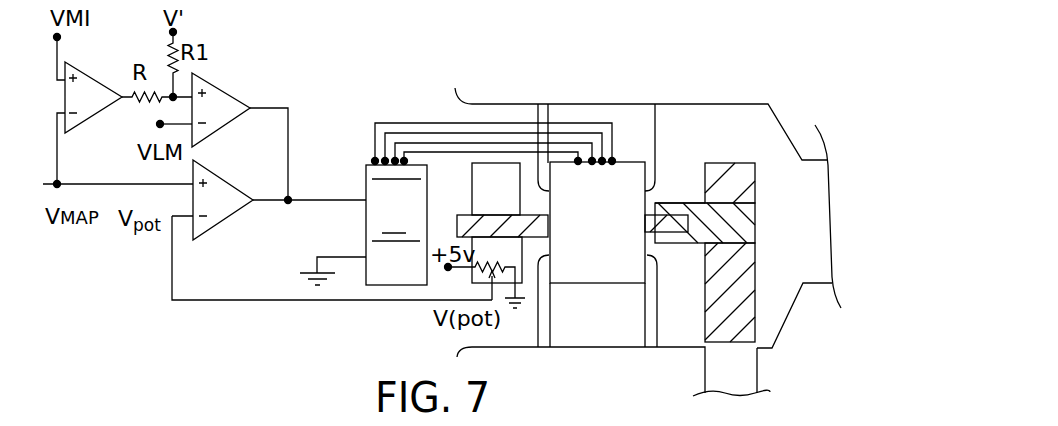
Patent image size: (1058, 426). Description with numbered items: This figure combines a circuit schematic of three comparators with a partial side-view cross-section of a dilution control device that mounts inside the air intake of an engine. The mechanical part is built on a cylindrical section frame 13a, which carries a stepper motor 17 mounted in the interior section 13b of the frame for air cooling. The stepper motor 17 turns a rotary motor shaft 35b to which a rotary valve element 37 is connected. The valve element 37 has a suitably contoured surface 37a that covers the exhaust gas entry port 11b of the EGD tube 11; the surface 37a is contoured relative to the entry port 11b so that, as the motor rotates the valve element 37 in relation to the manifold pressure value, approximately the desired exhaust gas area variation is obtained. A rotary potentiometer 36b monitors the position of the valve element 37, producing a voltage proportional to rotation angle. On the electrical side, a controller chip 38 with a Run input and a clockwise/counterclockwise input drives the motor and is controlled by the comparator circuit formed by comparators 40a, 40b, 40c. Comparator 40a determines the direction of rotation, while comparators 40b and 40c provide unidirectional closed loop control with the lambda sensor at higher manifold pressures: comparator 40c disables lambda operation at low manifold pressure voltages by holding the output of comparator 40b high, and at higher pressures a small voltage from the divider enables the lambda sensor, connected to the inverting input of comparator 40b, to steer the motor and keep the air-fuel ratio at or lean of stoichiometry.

The comparator 40a is at (223, 200).
The comparator 40b is at (221, 110).
The comparator 40c is at (93, 97).
The controller chip 38 is at (396, 222).
The rotary potentiometer 36b is at (518, 203).
The rotary motor shaft 35b is at (615, 235).
The stepper motor 17 is at (585, 284).
The cylindrical section frame 13a is at (683, 103).
The interior section 13b is at (725, 147).
The rotary valve element 37 is at (750, 331).
The contoured surface 37a is at (735, 343).
The EGD tube 11 is at (757, 366).
The exhaust gas entry port 11b is at (742, 347).